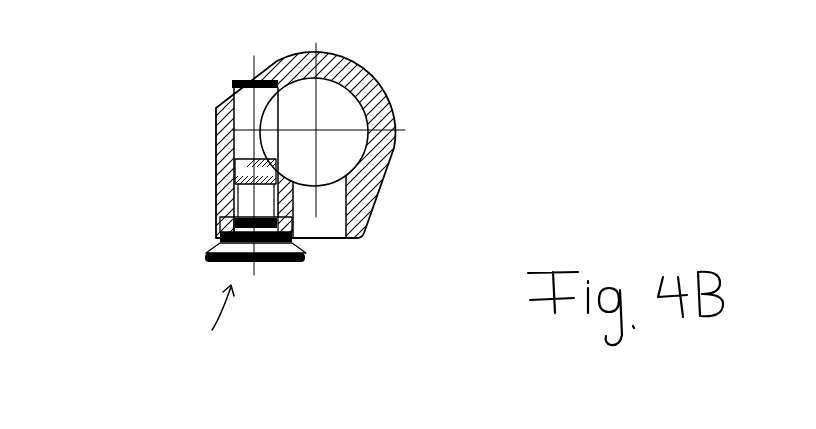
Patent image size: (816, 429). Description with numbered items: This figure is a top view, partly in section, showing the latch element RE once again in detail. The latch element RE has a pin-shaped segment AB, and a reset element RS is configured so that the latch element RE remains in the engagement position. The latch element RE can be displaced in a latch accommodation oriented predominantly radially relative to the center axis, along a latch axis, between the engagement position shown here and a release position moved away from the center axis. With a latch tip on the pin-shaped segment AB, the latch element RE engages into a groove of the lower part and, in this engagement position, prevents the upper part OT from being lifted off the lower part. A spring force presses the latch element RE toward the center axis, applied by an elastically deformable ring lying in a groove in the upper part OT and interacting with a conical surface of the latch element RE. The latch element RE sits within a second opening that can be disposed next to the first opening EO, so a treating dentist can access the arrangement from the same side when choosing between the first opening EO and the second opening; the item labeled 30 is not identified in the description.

The upper part OT is at (379, 86).
The pin-shaped segment AB is at (238, 146).
The first opening EO is at (320, 228).
The reset element RS is at (222, 235).
The foot element 30 is at (292, 288).
The latch element RE is at (240, 374).